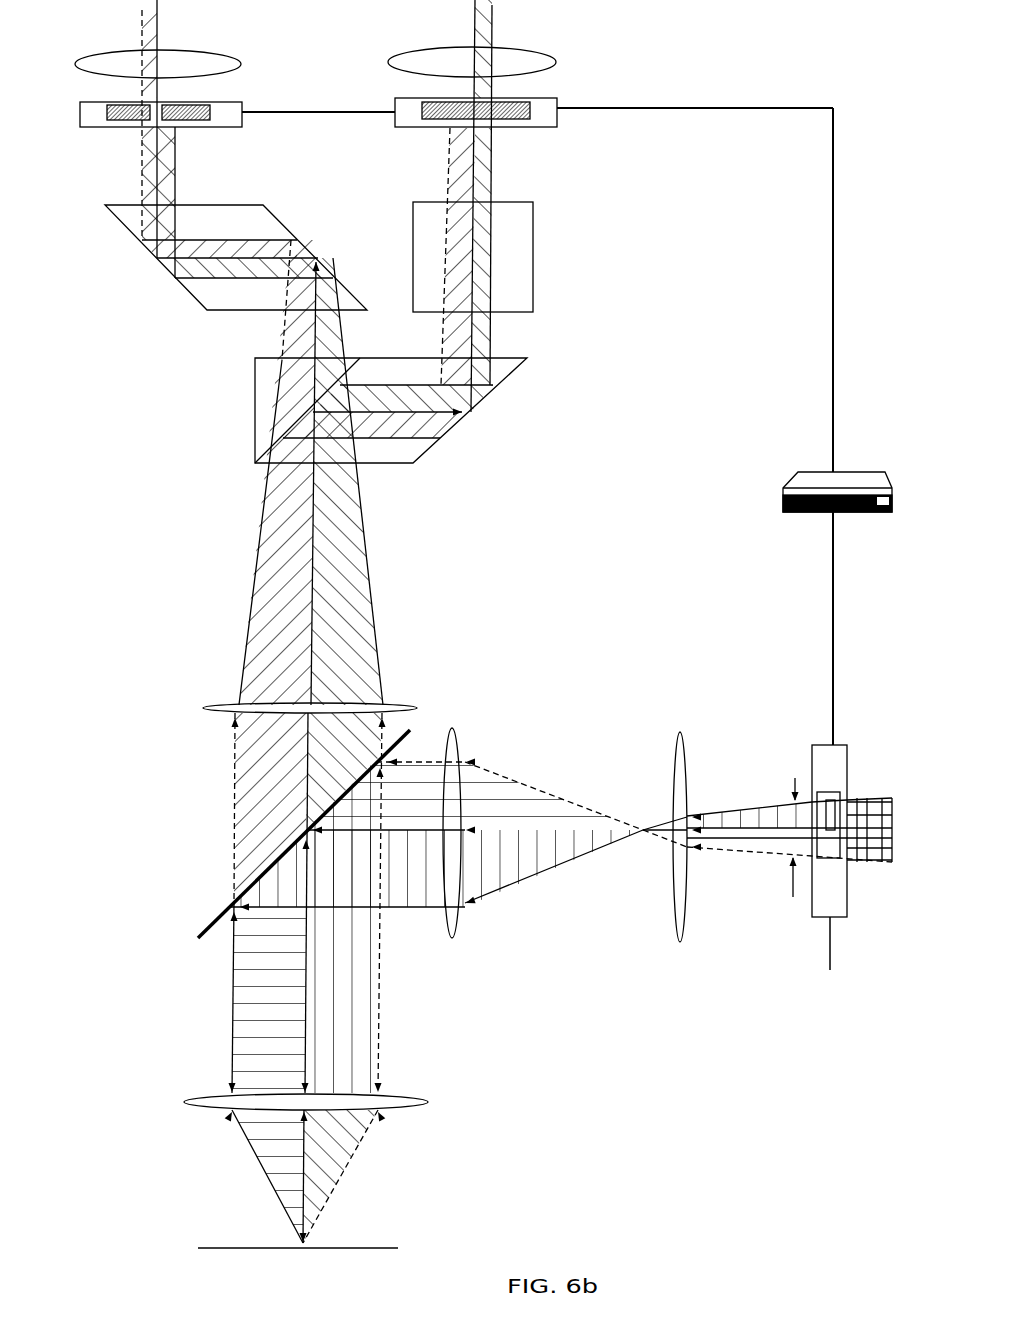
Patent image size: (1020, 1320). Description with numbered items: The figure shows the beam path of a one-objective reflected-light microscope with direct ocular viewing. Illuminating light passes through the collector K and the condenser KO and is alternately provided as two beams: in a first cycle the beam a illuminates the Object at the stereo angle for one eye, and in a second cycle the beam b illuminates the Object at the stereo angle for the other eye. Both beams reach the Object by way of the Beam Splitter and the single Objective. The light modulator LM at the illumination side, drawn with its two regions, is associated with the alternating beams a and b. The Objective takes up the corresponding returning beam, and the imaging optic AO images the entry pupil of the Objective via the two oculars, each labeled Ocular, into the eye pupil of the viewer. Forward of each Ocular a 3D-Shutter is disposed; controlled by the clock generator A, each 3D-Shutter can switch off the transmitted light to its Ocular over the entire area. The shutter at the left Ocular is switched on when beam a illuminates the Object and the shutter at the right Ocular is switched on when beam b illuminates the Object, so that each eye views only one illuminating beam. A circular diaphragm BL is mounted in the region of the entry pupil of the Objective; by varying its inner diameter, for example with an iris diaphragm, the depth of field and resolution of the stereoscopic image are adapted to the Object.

The ocular Ocular is at (255, 42).
The 3D-shutter 3D-Shutter is at (222, 127).
The beam splitter Beam Splitter is at (255, 432).
The imaging optic AO is at (203, 708).
The condenser KO is at (455, 920).
The collector K is at (678, 942).
The light modulator LM is at (829, 875).
The clock generator A is at (793, 512).
The circular diaphragm BL is at (779, 832).
The beam a is at (892, 813).
The beam b is at (892, 858).
The objective Objective is at (400, 1110).
The object Object is at (390, 1248).